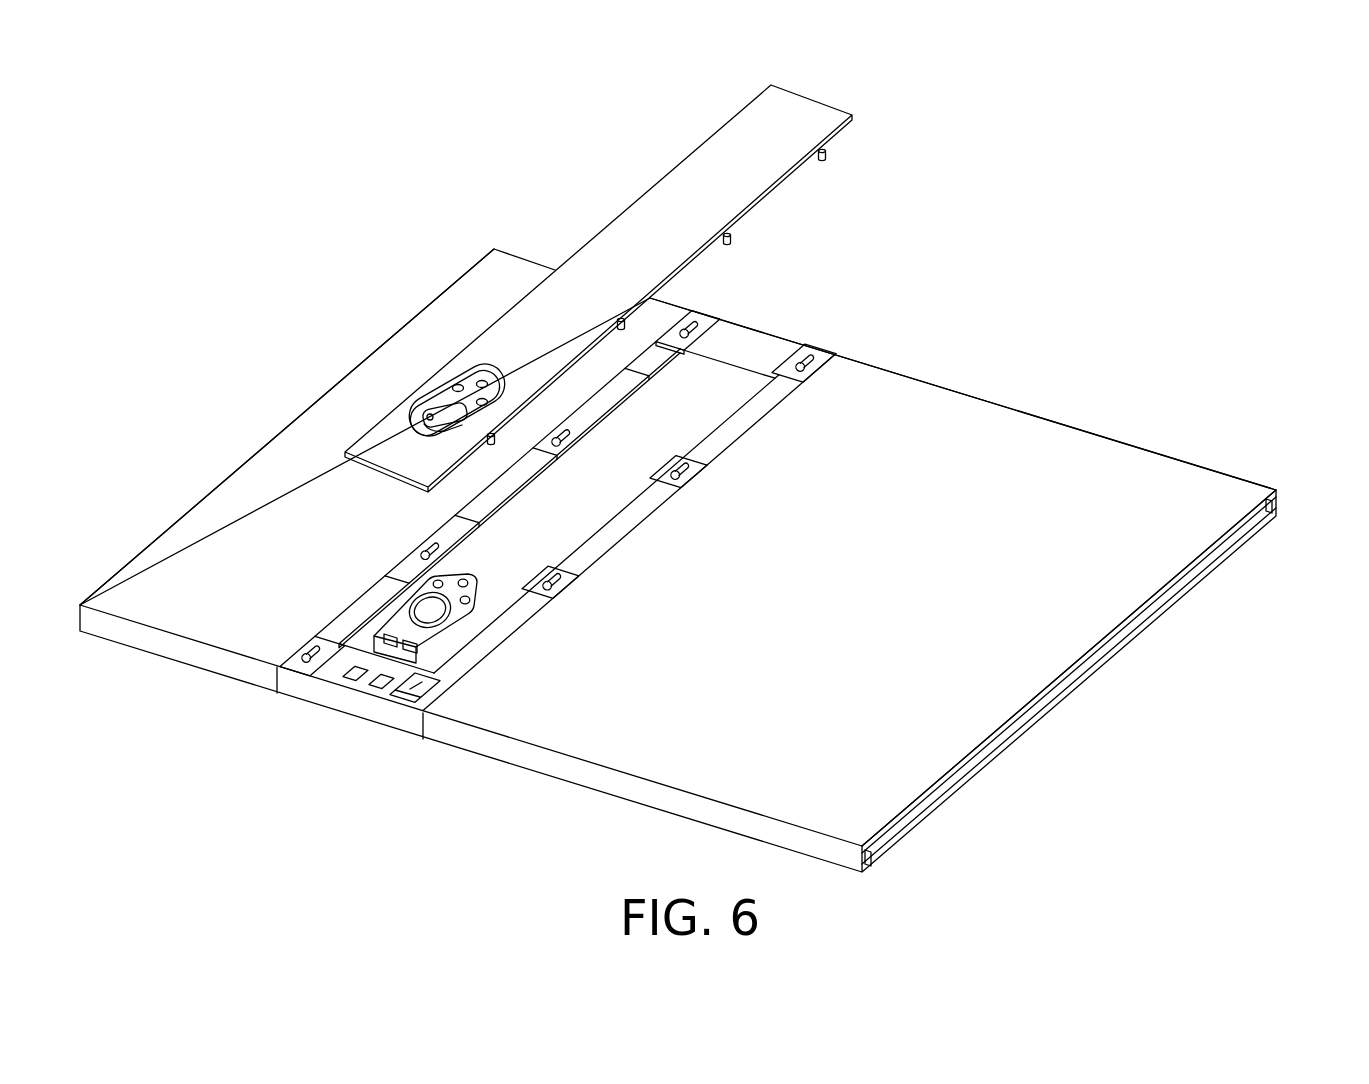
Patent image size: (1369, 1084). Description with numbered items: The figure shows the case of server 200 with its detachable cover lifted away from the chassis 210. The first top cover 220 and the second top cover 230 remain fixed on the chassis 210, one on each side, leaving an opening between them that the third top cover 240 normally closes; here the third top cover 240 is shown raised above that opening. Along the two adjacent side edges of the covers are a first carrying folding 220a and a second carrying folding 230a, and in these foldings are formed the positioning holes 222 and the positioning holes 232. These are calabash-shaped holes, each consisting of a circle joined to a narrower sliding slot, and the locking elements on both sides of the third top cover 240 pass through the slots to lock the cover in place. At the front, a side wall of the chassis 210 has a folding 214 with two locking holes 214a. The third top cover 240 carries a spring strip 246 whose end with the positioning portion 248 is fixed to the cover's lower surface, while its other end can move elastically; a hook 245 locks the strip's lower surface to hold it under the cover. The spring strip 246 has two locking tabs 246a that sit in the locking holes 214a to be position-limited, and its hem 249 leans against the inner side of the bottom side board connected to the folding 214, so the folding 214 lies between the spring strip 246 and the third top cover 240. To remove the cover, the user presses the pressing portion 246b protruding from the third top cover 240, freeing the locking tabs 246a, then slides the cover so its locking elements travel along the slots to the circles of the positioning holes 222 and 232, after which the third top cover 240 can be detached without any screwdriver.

The case of server 200 is at (1027, 840).
The chassis 210 is at (1272, 508).
The folding 214 is at (358, 682).
The locking holes 214a is at (383, 686).
The first top cover 220 is at (962, 410).
The first carrying folding 220a is at (823, 361).
The positioning holes 222 is at (562, 584).
The second top cover 230 is at (262, 485).
The second carrying folding 230a is at (703, 326).
The positioning holes 232 is at (424, 546).
The third top cover 240 is at (666, 158).
The hook 245 is at (427, 413).
The spring strip 246 is at (515, 620).
The locking tabs 246a is at (432, 650).
The pressing portion 246b is at (440, 582).
The positioning portion 248 is at (445, 413).
The hem 249 is at (430, 698).